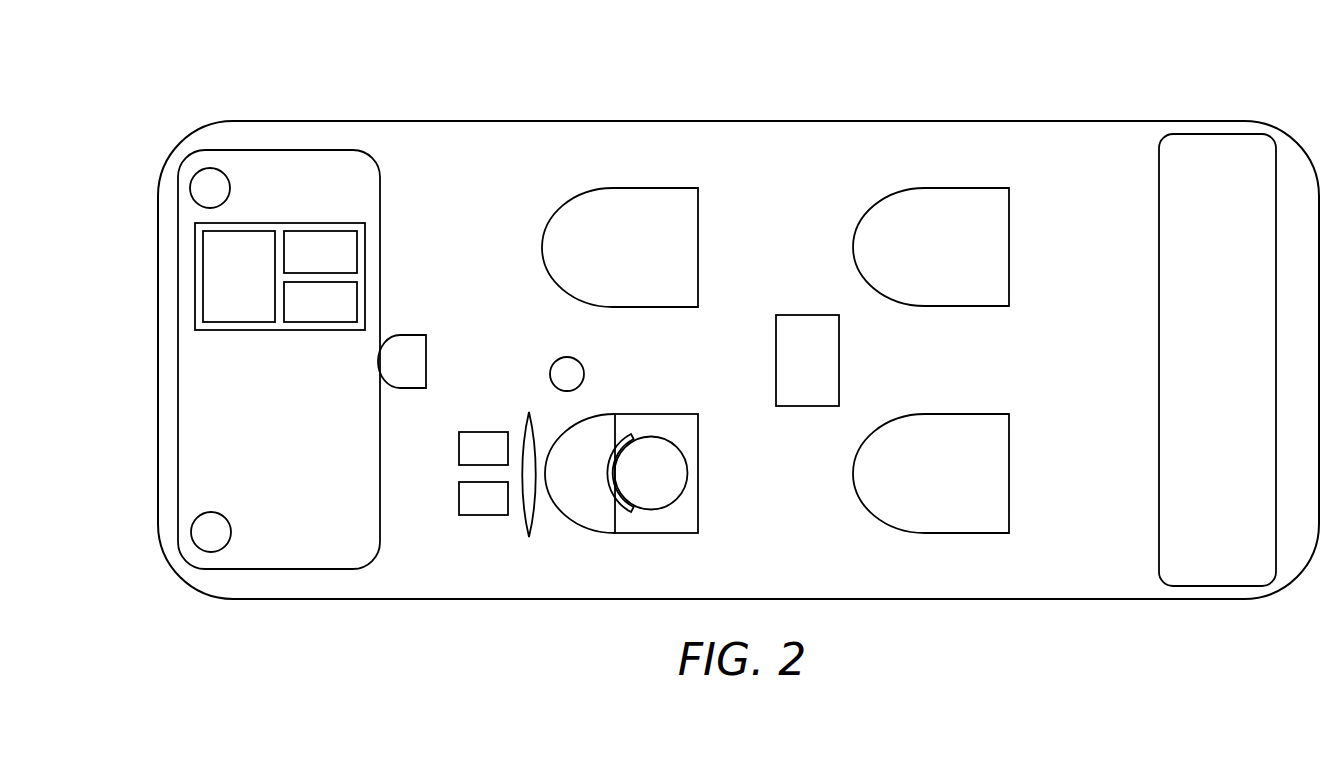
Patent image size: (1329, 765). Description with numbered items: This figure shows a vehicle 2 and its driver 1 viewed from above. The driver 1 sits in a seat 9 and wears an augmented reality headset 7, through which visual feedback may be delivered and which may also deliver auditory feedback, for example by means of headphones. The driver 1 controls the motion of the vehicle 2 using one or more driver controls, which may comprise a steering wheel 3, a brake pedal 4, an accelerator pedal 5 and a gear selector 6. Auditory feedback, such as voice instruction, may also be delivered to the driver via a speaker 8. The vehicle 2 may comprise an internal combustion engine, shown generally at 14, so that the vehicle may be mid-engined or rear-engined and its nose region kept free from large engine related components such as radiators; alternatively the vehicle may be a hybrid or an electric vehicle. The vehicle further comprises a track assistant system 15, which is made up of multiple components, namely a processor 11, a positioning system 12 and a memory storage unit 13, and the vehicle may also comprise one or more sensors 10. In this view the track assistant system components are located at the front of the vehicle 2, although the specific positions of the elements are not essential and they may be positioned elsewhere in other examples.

The driver 1 is at (687, 473).
The vehicle 2 is at (465, 121).
The steering wheel 3 is at (529, 540).
The brake pedal 4 is at (459, 497).
The accelerator pedal 5 is at (459, 447).
The gear selector 6 is at (584, 374).
The augmented reality headset 7 is at (621, 513).
The speaker 8 is at (426, 361).
The seat 9 is at (686, 414).
The sensors 10 is at (190, 188).
The processor 11 is at (258, 322).
The positioning system 12 is at (357, 243).
The memory storage unit 13 is at (357, 298).
The internal combustion engine 14 is at (839, 325).
The track assistant system 15 is at (178, 358).